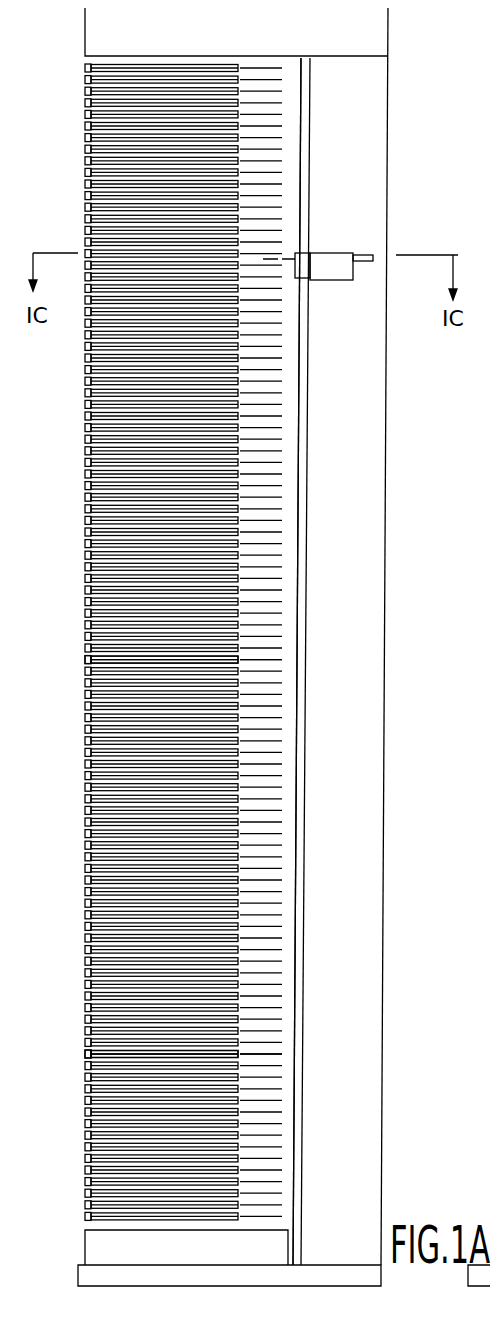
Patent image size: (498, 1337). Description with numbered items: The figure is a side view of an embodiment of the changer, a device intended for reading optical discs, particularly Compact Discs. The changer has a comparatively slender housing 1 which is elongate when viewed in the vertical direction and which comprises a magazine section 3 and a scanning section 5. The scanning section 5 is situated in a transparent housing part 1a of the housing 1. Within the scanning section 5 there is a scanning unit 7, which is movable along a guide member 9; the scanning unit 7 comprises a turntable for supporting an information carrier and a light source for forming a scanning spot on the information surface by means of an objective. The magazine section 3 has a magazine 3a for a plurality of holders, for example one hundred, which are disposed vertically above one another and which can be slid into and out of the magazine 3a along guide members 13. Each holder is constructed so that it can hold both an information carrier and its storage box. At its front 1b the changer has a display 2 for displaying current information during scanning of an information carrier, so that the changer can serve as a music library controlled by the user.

The housing 1 is at (488, 676).
The transparent housing part 1a is at (362, 1160).
The front 1b is at (77, 24).
The display 2 is at (488, 28).
The magazine section 3 is at (78, 57).
The magazine 3a is at (78, 656).
The scanning section 5 is at (283, 678).
The scanning unit 7 is at (328, 256).
The guide member 9 is at (300, 396).
The guide members 13 is at (78, 1049).